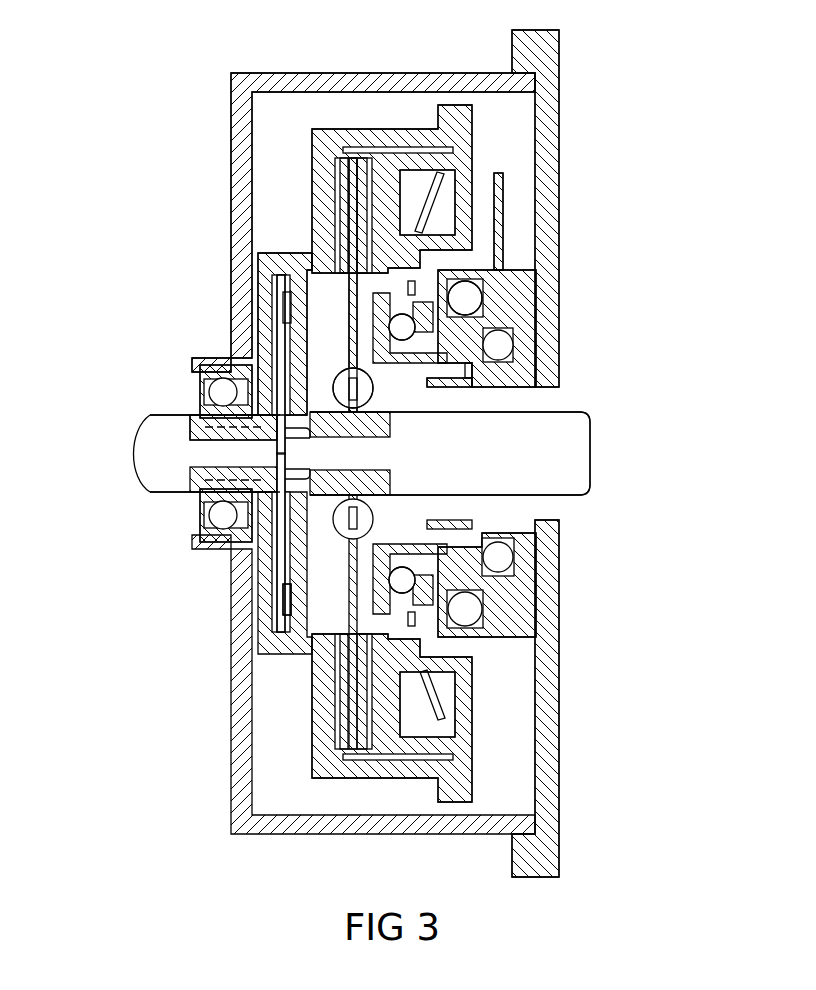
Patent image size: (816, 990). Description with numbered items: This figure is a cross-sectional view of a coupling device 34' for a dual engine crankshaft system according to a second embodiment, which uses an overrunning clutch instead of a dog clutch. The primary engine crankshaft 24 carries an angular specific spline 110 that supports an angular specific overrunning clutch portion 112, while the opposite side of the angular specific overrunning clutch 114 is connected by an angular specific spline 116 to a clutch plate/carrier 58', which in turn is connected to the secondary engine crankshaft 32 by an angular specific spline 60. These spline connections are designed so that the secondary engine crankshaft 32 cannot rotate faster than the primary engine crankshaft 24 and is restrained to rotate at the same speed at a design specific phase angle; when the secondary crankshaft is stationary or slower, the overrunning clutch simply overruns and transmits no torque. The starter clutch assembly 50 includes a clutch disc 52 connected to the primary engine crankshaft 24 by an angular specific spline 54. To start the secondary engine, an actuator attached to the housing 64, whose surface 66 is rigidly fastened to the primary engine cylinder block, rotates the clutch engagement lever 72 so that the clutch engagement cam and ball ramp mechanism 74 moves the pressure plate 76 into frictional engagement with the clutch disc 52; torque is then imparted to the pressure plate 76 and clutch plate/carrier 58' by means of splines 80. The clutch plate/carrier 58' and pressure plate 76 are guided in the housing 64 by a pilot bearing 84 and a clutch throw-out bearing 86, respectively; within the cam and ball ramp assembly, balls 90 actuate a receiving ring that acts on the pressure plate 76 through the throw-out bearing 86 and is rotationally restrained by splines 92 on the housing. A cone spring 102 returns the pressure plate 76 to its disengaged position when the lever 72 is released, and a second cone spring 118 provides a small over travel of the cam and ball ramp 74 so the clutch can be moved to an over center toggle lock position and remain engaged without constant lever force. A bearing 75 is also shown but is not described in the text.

The primary engine crankshaft 24 is at (560, 438).
The secondary engine crankshaft 32 is at (170, 440).
The coupling device 34' is at (346, 485).
The starter clutch assembly 50 is at (387, 108).
The clutch disc 52 is at (353, 213).
The angular specific spline 54 is at (350, 428).
The clutch plate/carrier 58' is at (242, 271).
The angular specific spline 60 is at (210, 418).
The housing 64 is at (555, 625).
The surface 66 is at (560, 765).
The clutch engagement lever 72 is at (503, 192).
The clutch engagement cam and ball ramp mechanism 74 is at (520, 285).
The bearing 75 is at (497, 553).
The pressure plate 76 is at (420, 193).
The splines 80 is at (375, 770).
The pilot bearing 84 is at (210, 520).
The clutch throw-out bearing 86 is at (398, 320).
The balls 90 is at (470, 300).
The splines 92 is at (467, 387).
The cone spring 102 is at (425, 685).
The angular specific spline 110 is at (300, 473).
The angular specific overrunning clutch portion 112 is at (283, 602).
The angular specific overrunning clutch 114 is at (290, 620).
The angular specific spline 116 is at (348, 293).
The cone spring 118 is at (425, 633).